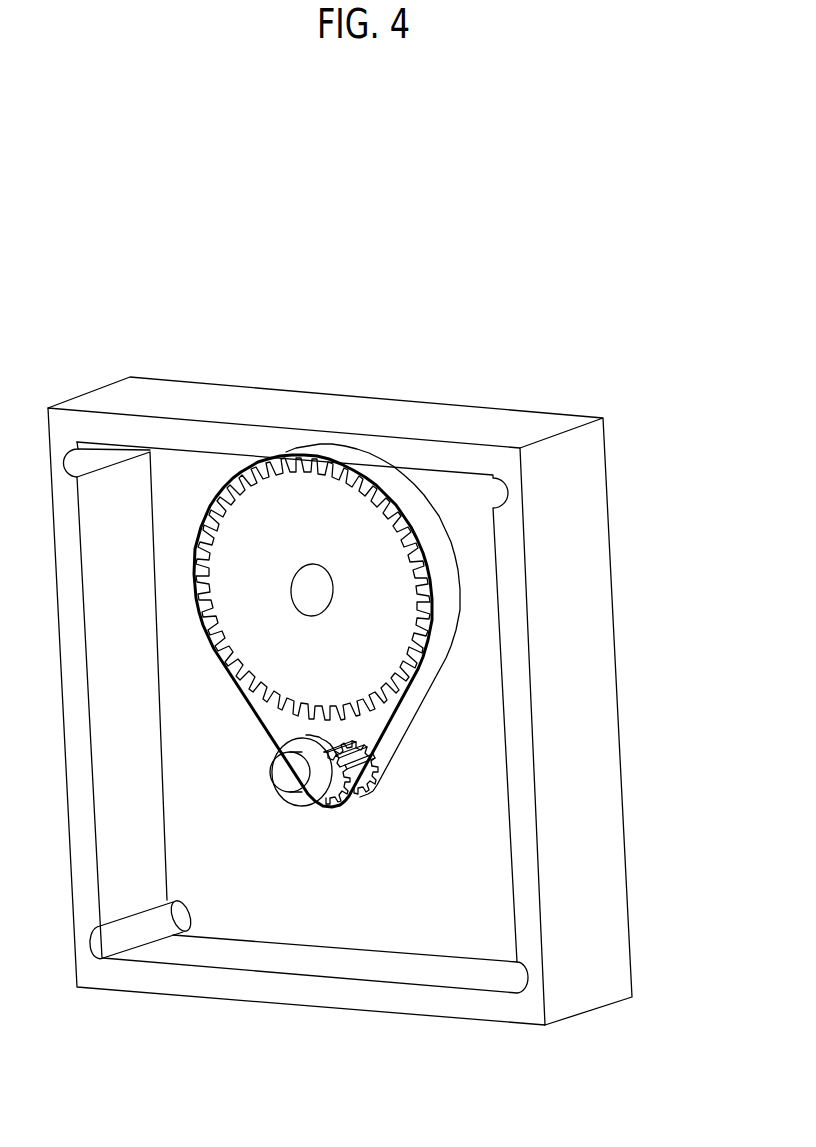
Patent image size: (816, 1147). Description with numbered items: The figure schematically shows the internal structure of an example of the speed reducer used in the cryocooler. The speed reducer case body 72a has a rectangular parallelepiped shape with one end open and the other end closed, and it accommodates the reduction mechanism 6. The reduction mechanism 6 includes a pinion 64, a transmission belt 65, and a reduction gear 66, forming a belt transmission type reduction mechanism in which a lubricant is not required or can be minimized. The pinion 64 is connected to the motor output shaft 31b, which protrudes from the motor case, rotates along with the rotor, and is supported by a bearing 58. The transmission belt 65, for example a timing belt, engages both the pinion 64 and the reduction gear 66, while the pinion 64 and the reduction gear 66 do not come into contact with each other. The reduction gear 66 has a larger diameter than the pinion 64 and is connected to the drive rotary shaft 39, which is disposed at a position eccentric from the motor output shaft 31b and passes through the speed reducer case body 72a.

The reduction mechanism 6 is at (472, 567).
The drive rotary shaft 39 is at (310, 590).
The pinion 64 is at (347, 730).
The transmission belt 65 is at (412, 698).
The reduction gear 66 is at (452, 524).
The speed reducer case body 72a is at (585, 883).
The motor output shaft 31b is at (300, 772).
The bearing 58 is at (320, 772).